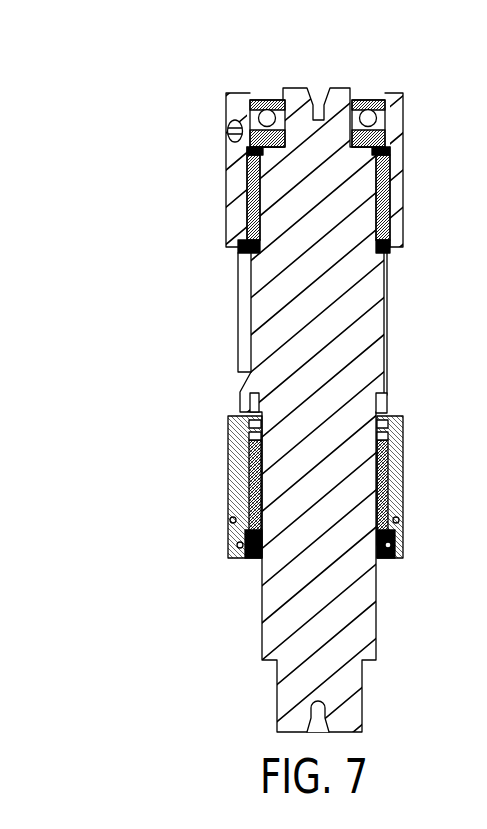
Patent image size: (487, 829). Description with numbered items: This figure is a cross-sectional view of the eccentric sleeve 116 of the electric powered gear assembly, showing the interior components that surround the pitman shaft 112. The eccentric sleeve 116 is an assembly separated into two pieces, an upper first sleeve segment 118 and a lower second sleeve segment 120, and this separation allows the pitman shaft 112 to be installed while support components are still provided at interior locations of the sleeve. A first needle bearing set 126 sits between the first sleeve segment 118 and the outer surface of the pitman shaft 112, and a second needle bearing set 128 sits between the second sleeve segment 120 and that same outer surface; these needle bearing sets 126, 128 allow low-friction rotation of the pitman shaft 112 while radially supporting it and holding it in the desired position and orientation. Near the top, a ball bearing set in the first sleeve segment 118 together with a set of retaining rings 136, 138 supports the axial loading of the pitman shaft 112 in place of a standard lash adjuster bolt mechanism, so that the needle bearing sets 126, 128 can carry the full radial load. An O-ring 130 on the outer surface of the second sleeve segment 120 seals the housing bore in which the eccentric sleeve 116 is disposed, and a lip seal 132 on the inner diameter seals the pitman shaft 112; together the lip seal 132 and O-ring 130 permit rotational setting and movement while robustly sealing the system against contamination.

The pitman shaft 112 is at (282, 620).
The eccentric sleeve 116 is at (203, 289).
The first sleeve segment 118 is at (233, 193).
The second sleeve segment 120 is at (383, 442).
The first needle bearing set 126 is at (378, 213).
The second needle bearing set 128 is at (383, 505).
The O-ring 130 is at (228, 522).
The lip seal 132 is at (385, 548).
The retaining ring 136 is at (370, 100).
The retaining ring 138 is at (372, 148).